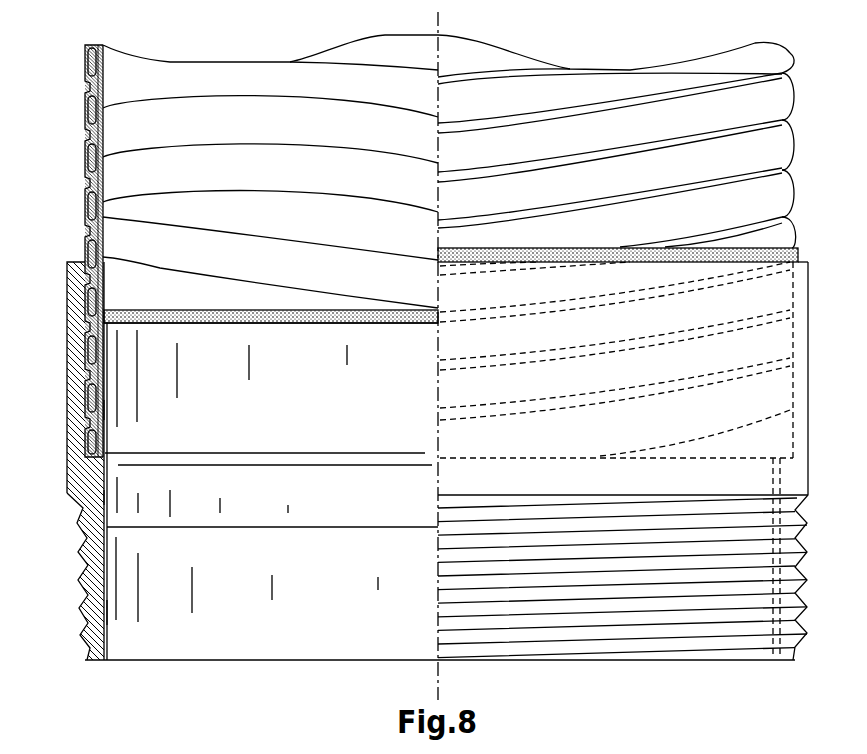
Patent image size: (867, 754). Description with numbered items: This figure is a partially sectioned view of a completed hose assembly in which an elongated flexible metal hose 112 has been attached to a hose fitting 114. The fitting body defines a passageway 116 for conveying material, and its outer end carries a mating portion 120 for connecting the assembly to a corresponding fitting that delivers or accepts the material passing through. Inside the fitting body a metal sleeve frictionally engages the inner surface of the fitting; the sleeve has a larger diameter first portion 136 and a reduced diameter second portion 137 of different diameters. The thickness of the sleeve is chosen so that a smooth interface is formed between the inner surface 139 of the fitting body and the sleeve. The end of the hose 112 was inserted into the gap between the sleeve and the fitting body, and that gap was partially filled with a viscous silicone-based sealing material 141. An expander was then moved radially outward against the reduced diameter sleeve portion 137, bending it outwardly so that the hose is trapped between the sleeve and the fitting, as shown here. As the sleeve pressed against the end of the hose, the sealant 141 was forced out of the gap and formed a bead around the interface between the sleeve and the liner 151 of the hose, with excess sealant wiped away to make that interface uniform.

The flexible metal hose 112 is at (86, 163).
The hose fitting 114 is at (67, 478).
The passageway 116 is at (241, 614).
The mating portion 120 is at (84, 598).
The first sleeve portion 136 is at (107, 498).
The second sleeve portion 137 is at (100, 410).
The inner surface of the fitting body 139 is at (107, 612).
The sealing material 141 is at (220, 310).
The liner 151 is at (232, 123).